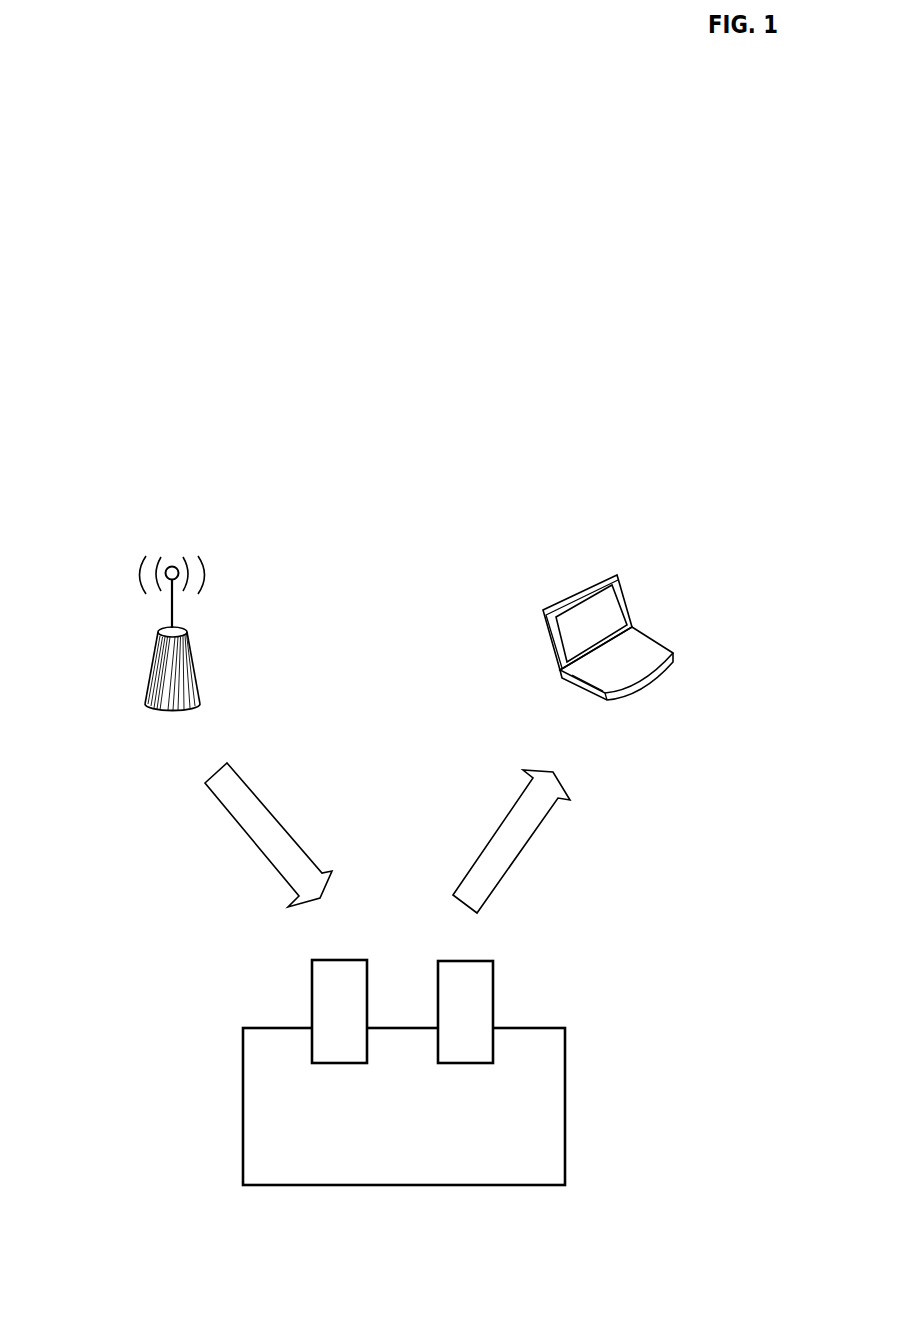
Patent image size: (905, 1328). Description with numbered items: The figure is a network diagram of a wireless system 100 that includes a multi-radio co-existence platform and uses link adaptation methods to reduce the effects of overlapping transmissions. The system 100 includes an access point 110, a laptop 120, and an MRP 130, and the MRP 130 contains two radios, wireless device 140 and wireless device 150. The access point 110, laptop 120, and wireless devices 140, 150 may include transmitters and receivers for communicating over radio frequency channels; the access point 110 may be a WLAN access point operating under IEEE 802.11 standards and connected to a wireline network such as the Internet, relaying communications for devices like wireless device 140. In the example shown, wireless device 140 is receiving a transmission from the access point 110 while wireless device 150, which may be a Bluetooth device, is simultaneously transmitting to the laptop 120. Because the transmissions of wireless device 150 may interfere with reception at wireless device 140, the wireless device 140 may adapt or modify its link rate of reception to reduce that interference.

The wireless system 100 is at (470, 251).
The access point 110 is at (150, 612).
The laptop 120 is at (653, 635).
The MRP 130 is at (235, 1100).
The wireless device 140 is at (345, 955).
The wireless device 150 is at (472, 958).